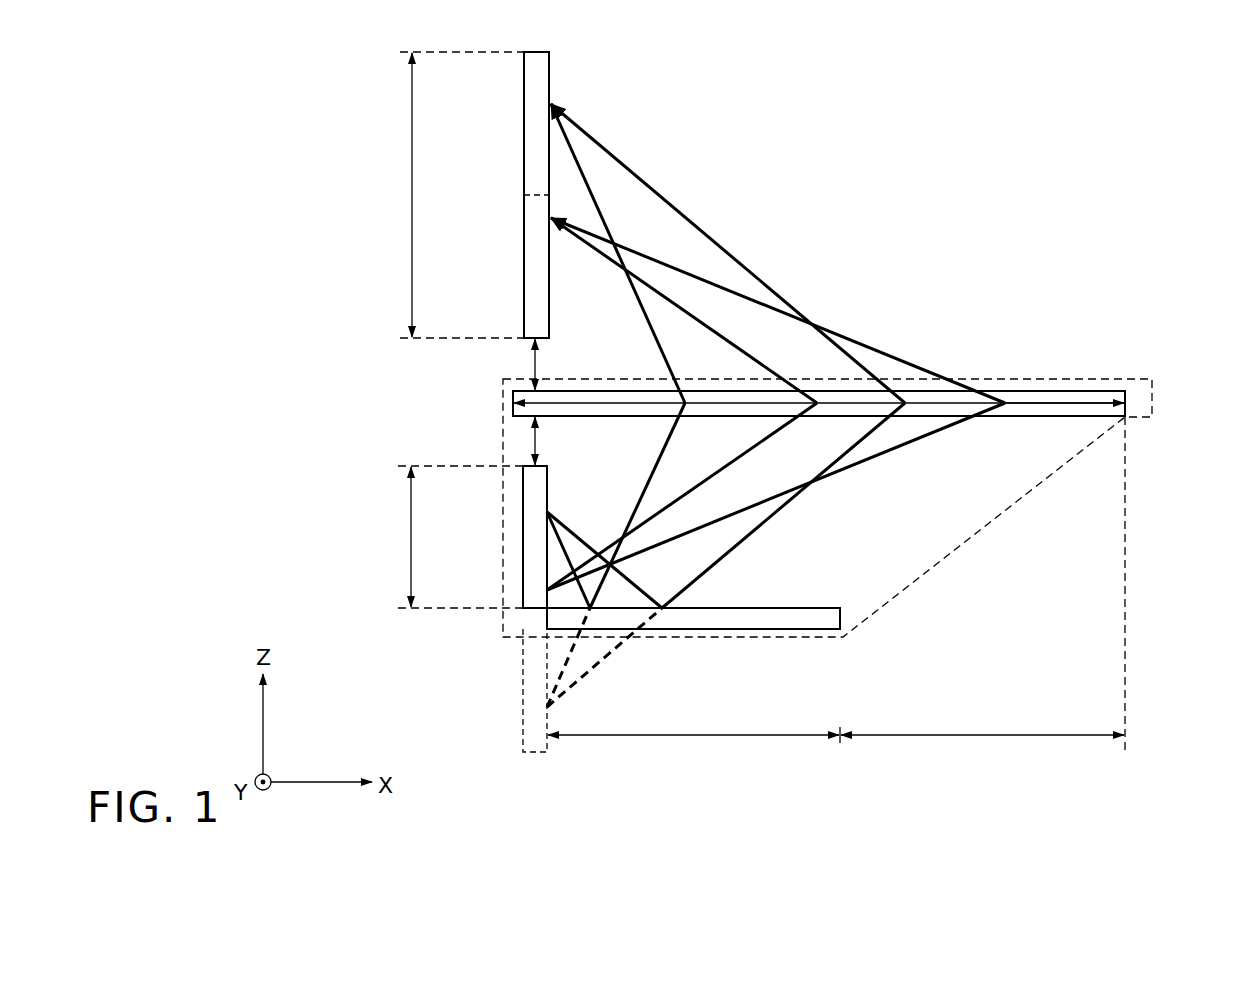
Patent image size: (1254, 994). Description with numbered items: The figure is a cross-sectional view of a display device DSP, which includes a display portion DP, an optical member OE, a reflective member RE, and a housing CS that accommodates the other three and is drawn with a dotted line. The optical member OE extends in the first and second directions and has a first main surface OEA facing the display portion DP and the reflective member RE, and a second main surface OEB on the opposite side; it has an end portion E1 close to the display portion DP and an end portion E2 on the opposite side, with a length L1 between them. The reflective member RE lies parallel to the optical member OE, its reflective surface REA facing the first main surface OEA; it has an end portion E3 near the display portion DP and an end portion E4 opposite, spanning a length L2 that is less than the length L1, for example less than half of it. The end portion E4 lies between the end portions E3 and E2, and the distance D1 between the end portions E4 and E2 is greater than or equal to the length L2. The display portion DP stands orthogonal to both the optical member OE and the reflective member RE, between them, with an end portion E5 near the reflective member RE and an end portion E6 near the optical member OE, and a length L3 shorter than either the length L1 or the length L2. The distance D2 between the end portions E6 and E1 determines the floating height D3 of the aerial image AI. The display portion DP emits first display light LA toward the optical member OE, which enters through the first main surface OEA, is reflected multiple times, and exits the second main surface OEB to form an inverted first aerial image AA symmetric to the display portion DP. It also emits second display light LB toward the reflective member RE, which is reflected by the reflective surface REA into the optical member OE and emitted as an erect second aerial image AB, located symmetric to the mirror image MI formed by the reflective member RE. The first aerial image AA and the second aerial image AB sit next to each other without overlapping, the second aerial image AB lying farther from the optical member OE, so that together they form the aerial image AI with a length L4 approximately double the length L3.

The display device DSP is at (1161, 613).
The display portion DP is at (530, 500).
The reflective member RE is at (739, 620).
The reflective surface REA is at (823, 604).
The optical member OE is at (1064, 397).
The first main surface OEA is at (921, 421).
The second main surface OEB is at (1013, 388).
The aerial image AI is at (474, 130).
The first aerial image AA is at (524, 228).
The second aerial image AB is at (524, 147).
The housing CS is at (1153, 390).
The mirror image MI is at (535, 752).
The first display light LA is at (566, 602).
The second display light LB is at (562, 504).
The end portion E1 is at (513, 403).
The end portion E2 is at (1127, 412).
The end portion E3 is at (545, 620).
The end portion E4 is at (841, 618).
The end portion E5 is at (530, 611).
The end portion E6 is at (523, 466).
The length L1 is at (1038, 406).
The length L2 is at (694, 746).
The length L3 is at (450, 537).
The length L4 is at (451, 195).
The distance D1 is at (983, 592).
The distance D2 is at (540, 440).
The floating height D3 is at (540, 358).